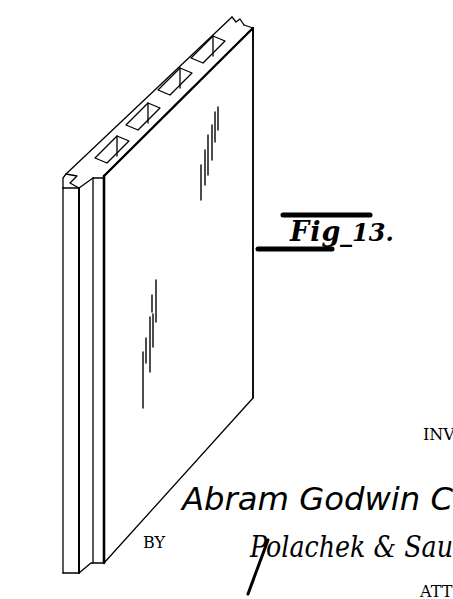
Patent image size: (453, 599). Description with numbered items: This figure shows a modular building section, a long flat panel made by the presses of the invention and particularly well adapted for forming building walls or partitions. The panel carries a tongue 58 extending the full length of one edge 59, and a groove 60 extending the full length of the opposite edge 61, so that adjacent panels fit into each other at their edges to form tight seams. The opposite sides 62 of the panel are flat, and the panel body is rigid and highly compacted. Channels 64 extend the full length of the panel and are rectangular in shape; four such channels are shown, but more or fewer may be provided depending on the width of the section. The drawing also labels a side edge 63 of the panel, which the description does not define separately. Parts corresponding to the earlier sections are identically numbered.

The outer wall of panel end 58 is at (73, 265).
The inner step of panel end 59 is at (97, 523).
The notch at top corner 60 is at (240, 22).
The top corner edge 61 is at (255, 27).
The front face of panel 62 is at (222, 116).
The side edge of panel 63 is at (252, 176).
The openings in top edge 64 is at (178, 70).